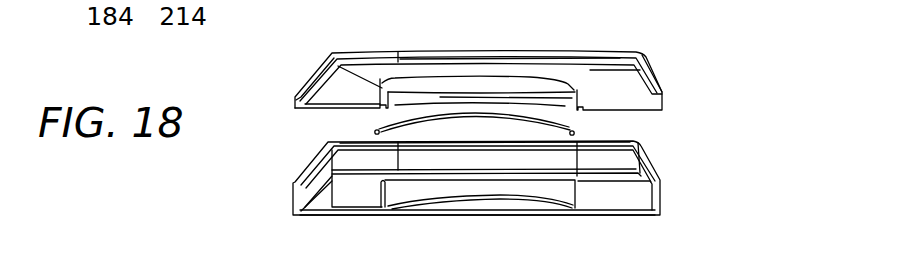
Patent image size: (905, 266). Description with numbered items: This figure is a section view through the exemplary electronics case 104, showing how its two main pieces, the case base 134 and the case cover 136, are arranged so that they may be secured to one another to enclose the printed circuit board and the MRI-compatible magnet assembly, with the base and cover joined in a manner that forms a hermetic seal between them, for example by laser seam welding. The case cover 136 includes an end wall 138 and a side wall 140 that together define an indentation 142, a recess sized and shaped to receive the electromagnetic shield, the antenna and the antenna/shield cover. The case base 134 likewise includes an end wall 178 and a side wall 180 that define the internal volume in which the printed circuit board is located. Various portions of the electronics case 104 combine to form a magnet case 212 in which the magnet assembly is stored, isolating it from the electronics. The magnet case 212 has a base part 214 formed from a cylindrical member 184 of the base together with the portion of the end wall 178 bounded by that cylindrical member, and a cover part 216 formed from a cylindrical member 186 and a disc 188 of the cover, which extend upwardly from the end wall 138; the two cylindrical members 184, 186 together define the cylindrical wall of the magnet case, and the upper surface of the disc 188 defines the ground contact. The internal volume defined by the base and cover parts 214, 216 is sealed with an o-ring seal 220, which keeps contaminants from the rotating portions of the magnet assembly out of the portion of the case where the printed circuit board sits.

The electronics case 104 is at (211, 162).
The case base 134 is at (289, 172).
The case cover 136 is at (328, 52).
The end wall 138 is at (572, 72).
The side wall 140 is at (610, 52).
The indentation 142 is at (594, 101).
The end wall 178 is at (598, 216).
The side wall 180 is at (636, 143).
The cylindrical member 184 is at (380, 194).
The cylindrical member 186 is at (376, 94).
The disc 188 is at (413, 80).
The magnet case 212 is at (508, 228).
The base part 214 is at (582, 193).
The cover part 216 is at (465, 69).
The o-ring seal 220 is at (375, 131).